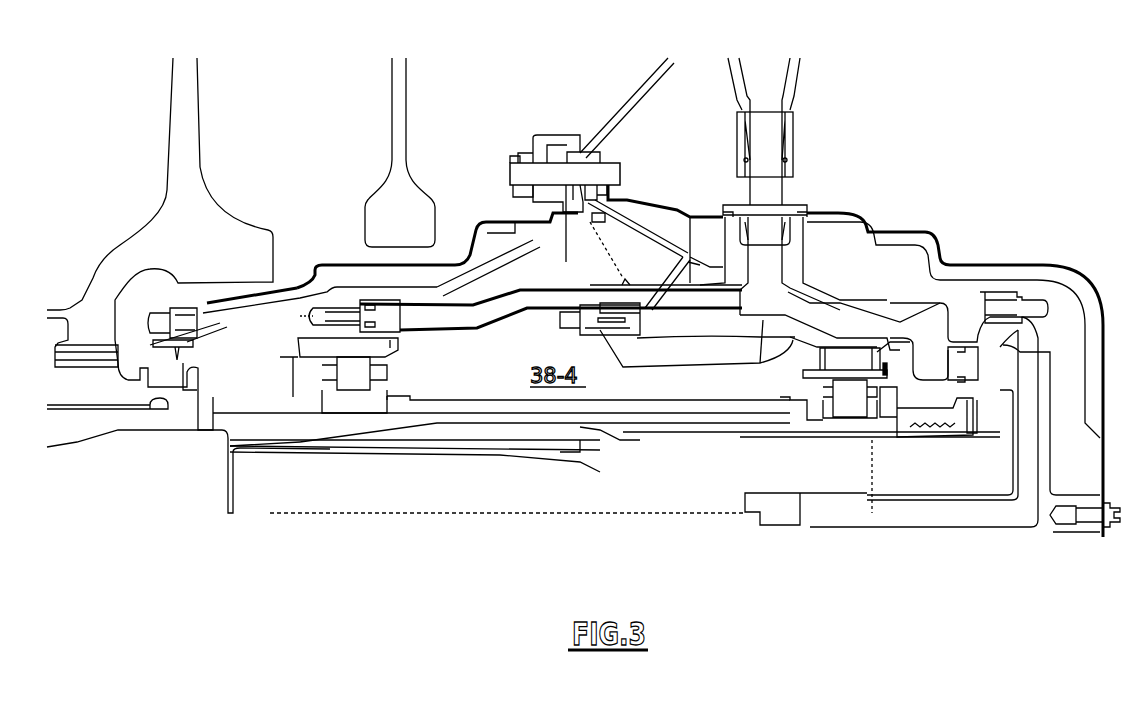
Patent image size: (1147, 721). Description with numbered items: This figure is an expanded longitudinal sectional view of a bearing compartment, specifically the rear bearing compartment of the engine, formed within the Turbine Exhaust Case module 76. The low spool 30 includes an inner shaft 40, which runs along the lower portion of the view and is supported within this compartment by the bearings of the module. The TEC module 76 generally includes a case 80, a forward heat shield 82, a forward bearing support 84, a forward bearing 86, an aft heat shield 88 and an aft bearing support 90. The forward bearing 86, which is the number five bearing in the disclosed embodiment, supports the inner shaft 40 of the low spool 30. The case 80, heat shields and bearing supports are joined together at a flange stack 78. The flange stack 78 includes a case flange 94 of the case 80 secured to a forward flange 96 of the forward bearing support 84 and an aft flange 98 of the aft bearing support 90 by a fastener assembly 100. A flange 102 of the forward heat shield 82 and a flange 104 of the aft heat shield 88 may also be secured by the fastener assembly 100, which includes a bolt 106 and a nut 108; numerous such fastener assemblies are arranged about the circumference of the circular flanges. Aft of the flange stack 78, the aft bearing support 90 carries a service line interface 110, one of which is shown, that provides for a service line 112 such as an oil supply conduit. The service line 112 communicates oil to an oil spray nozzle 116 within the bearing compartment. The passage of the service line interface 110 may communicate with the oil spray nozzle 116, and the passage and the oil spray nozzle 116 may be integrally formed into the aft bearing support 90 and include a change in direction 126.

The low spool 30 is at (642, 426).
The inner shaft 40 is at (503, 425).
The Turbine Exhaust Case (TEC) module 76 is at (828, 162).
The flange stack 78 is at (516, 75).
The case 80 is at (640, 75).
The forward heat shield 82 is at (480, 222).
The forward bearing support 84 is at (468, 278).
The forward bearing 86 is at (365, 372).
The aft heat shield 88 is at (673, 212).
The aft bearing support 90 is at (763, 320).
The case flange 94 is at (530, 140).
The forward flange 96 is at (573, 202).
The aft flange 98 is at (605, 248).
The fastener assembly 100 is at (628, 173).
The flange of the forward heat shield 102 is at (557, 222).
The flange of the aft heat shield 104 is at (583, 135).
The bolt 106 is at (598, 158).
The nut 108 is at (515, 156).
The service line interface 110 is at (815, 243).
The service line 112 is at (800, 72).
The oil spray nozzle 116 is at (560, 318).
The change in direction 126 is at (865, 322).